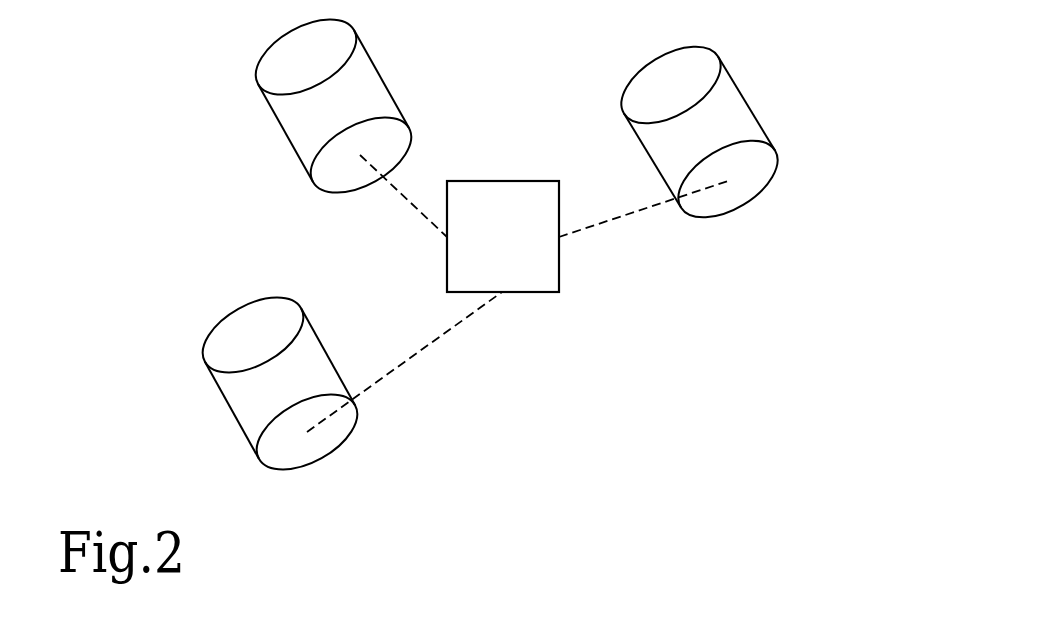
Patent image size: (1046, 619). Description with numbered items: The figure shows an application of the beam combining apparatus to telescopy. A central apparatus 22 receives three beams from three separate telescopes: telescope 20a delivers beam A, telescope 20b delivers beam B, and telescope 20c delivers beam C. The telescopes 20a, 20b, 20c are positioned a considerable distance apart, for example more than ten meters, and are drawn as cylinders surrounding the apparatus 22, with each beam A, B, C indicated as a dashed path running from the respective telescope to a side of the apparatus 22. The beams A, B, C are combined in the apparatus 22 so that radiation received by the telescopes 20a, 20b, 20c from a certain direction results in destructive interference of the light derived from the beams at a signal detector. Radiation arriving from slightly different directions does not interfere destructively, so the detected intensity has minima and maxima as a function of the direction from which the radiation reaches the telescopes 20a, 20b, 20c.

The telescope 20a is at (280, 125).
The telescope 20b is at (760, 122).
The telescope 20c is at (227, 403).
The apparatus 22 is at (497, 181).
The beam A is at (417, 211).
The beam B is at (623, 218).
The beam C is at (412, 357).